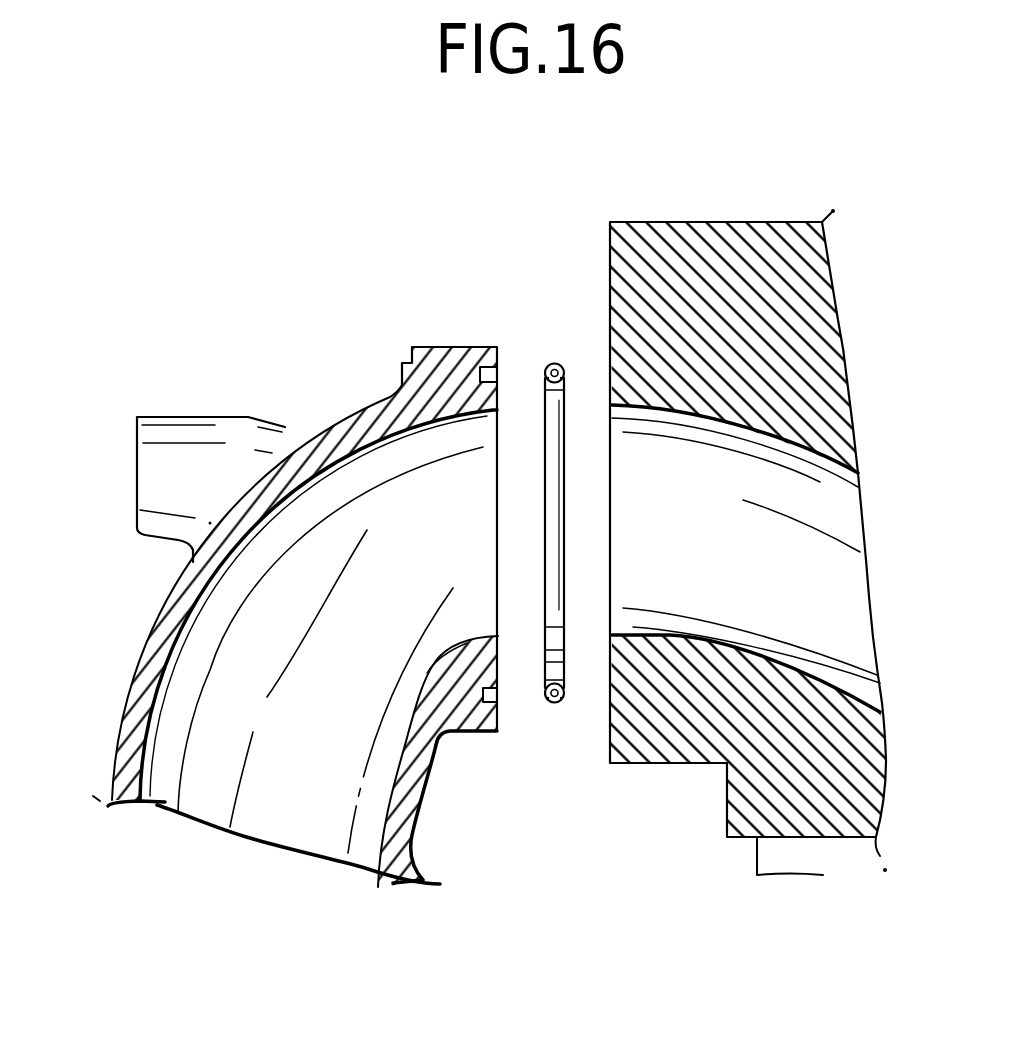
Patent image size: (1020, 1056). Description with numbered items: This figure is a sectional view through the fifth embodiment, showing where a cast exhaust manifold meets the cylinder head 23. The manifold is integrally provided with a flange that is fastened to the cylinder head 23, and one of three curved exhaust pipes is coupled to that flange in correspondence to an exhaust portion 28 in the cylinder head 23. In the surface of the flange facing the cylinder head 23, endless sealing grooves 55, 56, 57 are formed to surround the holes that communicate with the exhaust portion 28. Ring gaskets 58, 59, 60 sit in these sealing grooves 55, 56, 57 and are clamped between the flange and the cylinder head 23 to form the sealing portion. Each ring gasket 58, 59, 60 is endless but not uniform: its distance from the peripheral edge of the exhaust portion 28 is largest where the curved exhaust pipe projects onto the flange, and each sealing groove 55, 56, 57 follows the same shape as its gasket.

The cylinder head 23 is at (702, 240).
The exhaust portion 28 is at (713, 645).
The ring gasket 58 is at (528, 408).
The ring gasket 60 is at (528, 408).
The ring gasket 59 is at (546, 364).
The sealing groove 57 is at (539, 824).
The sealing groove 56 is at (539, 824).
The sealing groove 55 is at (539, 824).